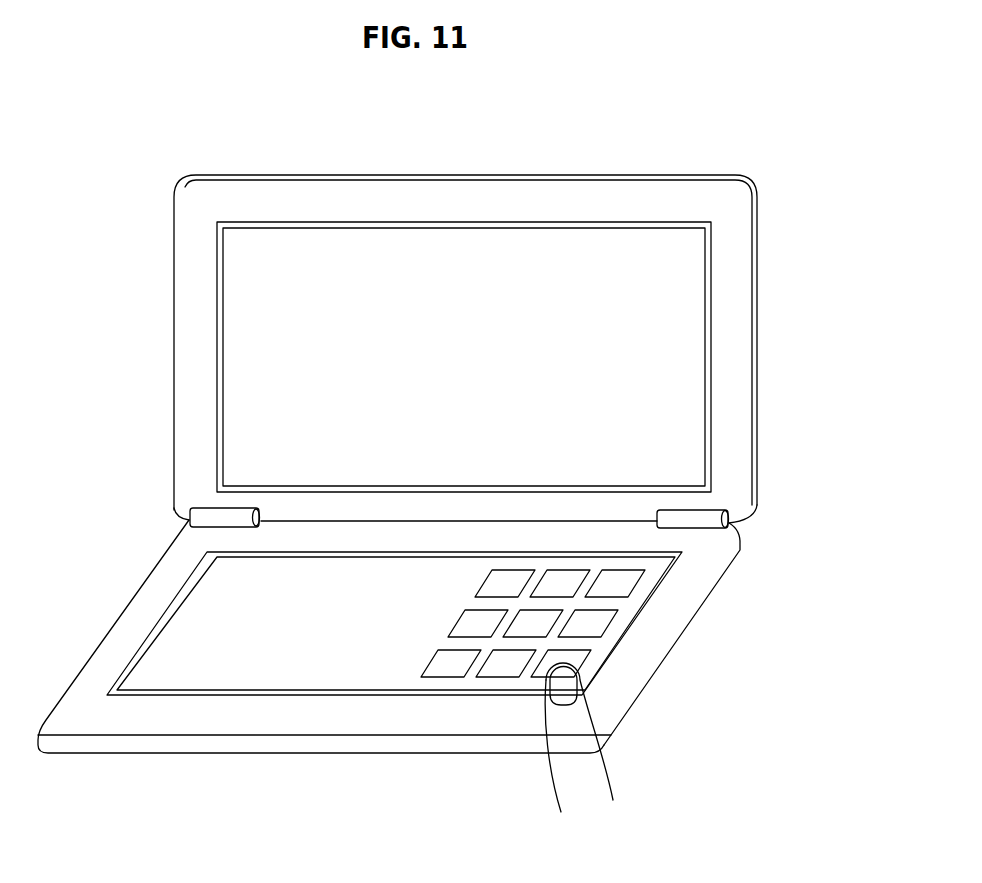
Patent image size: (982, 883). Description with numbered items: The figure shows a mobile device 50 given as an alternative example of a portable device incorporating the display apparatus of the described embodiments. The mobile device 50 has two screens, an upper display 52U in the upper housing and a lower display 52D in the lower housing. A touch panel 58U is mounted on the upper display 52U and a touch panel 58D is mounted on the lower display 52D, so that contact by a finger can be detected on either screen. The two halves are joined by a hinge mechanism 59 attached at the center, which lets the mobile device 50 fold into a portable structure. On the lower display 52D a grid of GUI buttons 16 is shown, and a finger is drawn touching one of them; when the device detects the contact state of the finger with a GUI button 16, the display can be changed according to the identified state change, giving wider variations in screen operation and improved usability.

The mobile device 50 is at (433, 152).
The upper display 52U is at (633, 276).
The lower display 52D is at (630, 563).
The touch panel 58U is at (218, 303).
The touch panel 58D is at (168, 620).
The hinge mechanism 59 is at (193, 508).
The GUI button 16 is at (588, 665).